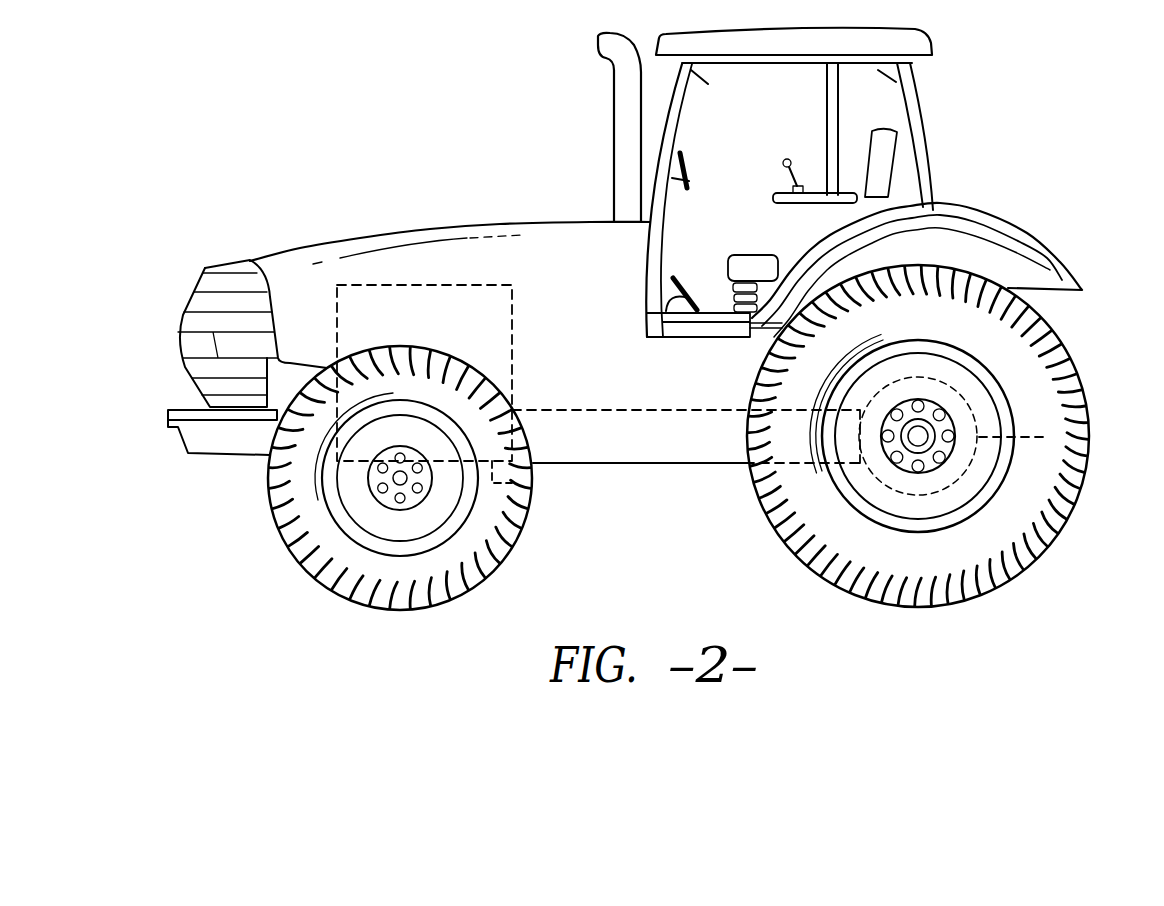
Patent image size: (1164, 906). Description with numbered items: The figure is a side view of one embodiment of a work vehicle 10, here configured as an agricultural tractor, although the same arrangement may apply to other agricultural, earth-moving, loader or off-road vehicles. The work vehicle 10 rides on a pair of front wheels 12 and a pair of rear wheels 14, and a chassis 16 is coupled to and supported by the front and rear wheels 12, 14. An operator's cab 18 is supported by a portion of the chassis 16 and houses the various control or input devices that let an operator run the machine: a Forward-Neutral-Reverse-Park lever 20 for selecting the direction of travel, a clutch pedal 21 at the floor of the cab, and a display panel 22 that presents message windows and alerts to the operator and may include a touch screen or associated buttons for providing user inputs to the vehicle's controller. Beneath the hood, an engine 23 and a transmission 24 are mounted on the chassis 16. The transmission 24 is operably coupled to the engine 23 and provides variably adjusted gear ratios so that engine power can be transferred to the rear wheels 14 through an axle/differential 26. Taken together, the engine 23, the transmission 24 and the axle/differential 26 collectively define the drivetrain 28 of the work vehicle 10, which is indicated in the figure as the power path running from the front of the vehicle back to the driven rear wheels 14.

The work vehicle 10 is at (340, 143).
The front wheels 12 is at (268, 494).
The rear wheels 14 is at (1093, 463).
The chassis 16 is at (592, 465).
The operator's cab 18 is at (924, 138).
The Forward-Neutral-Reverse-Park (FNRP) lever 20 is at (783, 162).
The clutch pedal 21 is at (690, 299).
The display panel 22 is at (688, 162).
The engine 23 is at (402, 285).
The transmission 24 is at (647, 408).
The axle/differential 26 is at (1043, 437).
The drivetrain 28 is at (562, 250).